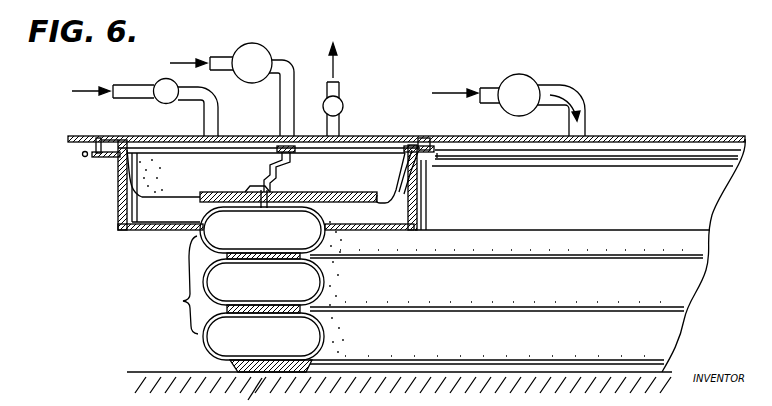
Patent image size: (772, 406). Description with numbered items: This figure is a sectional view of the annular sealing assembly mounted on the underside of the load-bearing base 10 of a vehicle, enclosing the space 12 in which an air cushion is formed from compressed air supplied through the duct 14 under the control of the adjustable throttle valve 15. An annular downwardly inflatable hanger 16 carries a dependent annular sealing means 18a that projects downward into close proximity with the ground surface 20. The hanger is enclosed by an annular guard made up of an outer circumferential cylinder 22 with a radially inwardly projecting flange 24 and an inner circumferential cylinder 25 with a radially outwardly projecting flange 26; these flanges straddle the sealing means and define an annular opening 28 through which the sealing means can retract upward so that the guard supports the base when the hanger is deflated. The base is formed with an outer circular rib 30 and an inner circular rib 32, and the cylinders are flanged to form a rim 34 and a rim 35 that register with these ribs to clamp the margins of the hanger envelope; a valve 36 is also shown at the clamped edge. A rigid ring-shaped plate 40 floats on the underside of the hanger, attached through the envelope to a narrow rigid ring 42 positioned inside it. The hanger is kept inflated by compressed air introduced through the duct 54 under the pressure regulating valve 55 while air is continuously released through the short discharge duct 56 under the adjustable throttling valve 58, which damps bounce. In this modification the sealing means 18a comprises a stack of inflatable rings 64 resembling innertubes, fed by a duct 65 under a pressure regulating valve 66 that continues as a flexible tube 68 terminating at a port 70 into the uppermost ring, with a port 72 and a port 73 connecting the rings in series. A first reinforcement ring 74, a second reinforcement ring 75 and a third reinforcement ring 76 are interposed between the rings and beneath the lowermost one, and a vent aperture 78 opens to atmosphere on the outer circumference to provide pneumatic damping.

The load-bearing base 10 is at (689, 136).
The space 12 is at (616, 203).
The duct 14 is at (586, 118).
The adjustable throttle valve 15 is at (528, 80).
The annular downwardly inflatable hanger 16 is at (400, 198).
The annular sealing means 18a is at (167, 285).
The ground surface 20 is at (576, 372).
The outer circumferential cylinder 22 is at (116, 216).
The radially inwardly projecting flange 24 is at (140, 232).
The inner circumferential cylinder 25 is at (436, 220).
The radially outwardly projecting flange 26 is at (389, 240).
The annular opening 28 is at (334, 232).
The outer circular rib 30 is at (148, 150).
The inner circular rib 32 is at (399, 189).
The rim 34 is at (106, 160).
The rim 35 is at (429, 151).
The valve 36 is at (82, 156).
The rigid ring-shaped plate 40 is at (340, 193).
The rigid ring 42 is at (248, 188).
The duct 54 is at (219, 117).
The pressure regulating valve 55 is at (158, 81).
The short discharge duct 56 is at (342, 127).
The adjustable throttling valve 58 is at (343, 103).
The inflatable rings 64 is at (210, 242).
The duct 65 is at (292, 68).
The pressure regulating valve 66 is at (256, 52).
The flexible tube 68 is at (285, 171).
The port 70 is at (263, 214).
The port 72 is at (263, 268).
The port 73 is at (265, 322).
The first reinforcement ring 74 is at (462, 258).
The second reinforcement ring 75 is at (392, 311).
The third reinforcement ring 76 is at (367, 372).
The vent aperture 78 is at (198, 330).